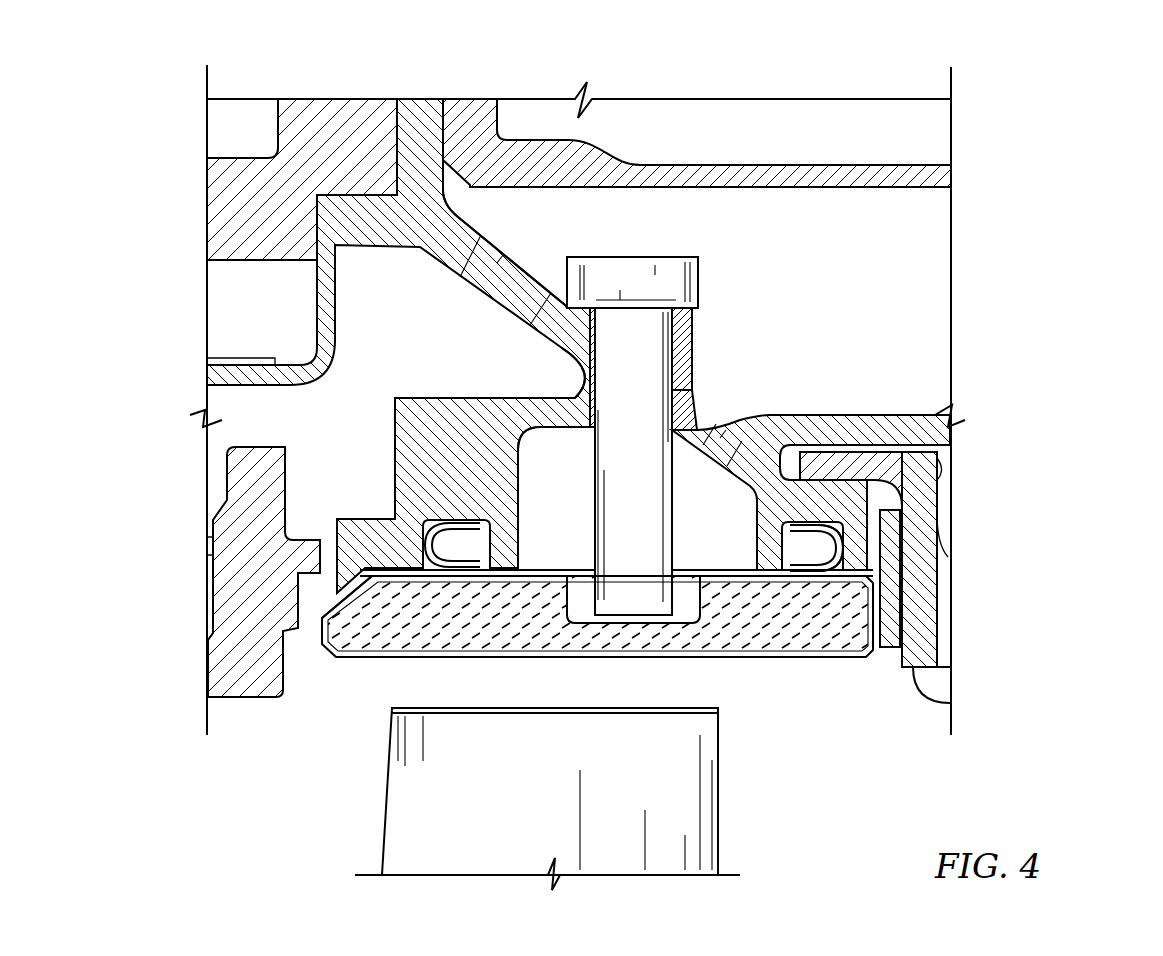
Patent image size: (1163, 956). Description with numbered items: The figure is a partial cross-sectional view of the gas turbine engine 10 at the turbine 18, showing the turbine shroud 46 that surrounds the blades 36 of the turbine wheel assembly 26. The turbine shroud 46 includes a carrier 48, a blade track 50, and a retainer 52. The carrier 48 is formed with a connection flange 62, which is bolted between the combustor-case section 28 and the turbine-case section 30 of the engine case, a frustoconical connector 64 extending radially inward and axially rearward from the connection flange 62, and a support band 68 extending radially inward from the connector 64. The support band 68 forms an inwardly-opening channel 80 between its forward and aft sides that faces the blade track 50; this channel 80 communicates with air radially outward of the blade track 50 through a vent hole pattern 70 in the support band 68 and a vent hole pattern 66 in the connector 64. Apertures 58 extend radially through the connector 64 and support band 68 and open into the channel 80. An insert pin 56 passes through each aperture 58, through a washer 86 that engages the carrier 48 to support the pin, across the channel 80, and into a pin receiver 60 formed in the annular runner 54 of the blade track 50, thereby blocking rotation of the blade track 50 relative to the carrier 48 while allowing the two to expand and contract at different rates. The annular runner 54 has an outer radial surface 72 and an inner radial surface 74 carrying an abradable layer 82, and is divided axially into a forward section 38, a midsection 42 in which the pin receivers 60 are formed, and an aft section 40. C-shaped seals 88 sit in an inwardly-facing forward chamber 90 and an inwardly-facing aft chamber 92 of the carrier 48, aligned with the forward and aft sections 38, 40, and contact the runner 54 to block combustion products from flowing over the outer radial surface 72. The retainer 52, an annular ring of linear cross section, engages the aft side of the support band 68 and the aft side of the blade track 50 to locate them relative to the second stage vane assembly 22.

The gas turbine engine 10 is at (1077, 140).
The turbine 18 is at (958, 138).
The second stage vane assembly 22 is at (938, 478).
The turbine wheel assembly 26 is at (433, 797).
The combustor-case section 28 is at (278, 132).
The turbine-case section 30 is at (670, 163).
The blades 36 is at (393, 837).
The forward section 38 is at (328, 683).
The aft section 40 is at (852, 664).
The midsection 42 is at (573, 664).
The turbine shroud 46 is at (902, 230).
The carrier 48 is at (775, 413).
The blade track 50 is at (795, 664).
The retainer 52 is at (905, 580).
The annular runner 54 is at (738, 657).
The insert pins 56 is at (675, 323).
The apertures 58 is at (587, 423).
The pin receivers 60 is at (585, 593).
The connection flange 62 is at (453, 135).
The connector 64 is at (472, 230).
The vent hole pattern 66 is at (480, 265).
The support band 68 is at (430, 396).
The vent hole pattern 70 is at (718, 423).
The outer radial surface 72 is at (530, 570).
The inner radial surface 74 is at (365, 658).
The inwardly-opening channel 80 is at (537, 480).
The abradable layer 82 is at (397, 657).
The washers 86 is at (693, 355).
The seals 88 is at (448, 553).
The forward chamber 90 is at (455, 524).
The aft chamber 92 is at (803, 533).